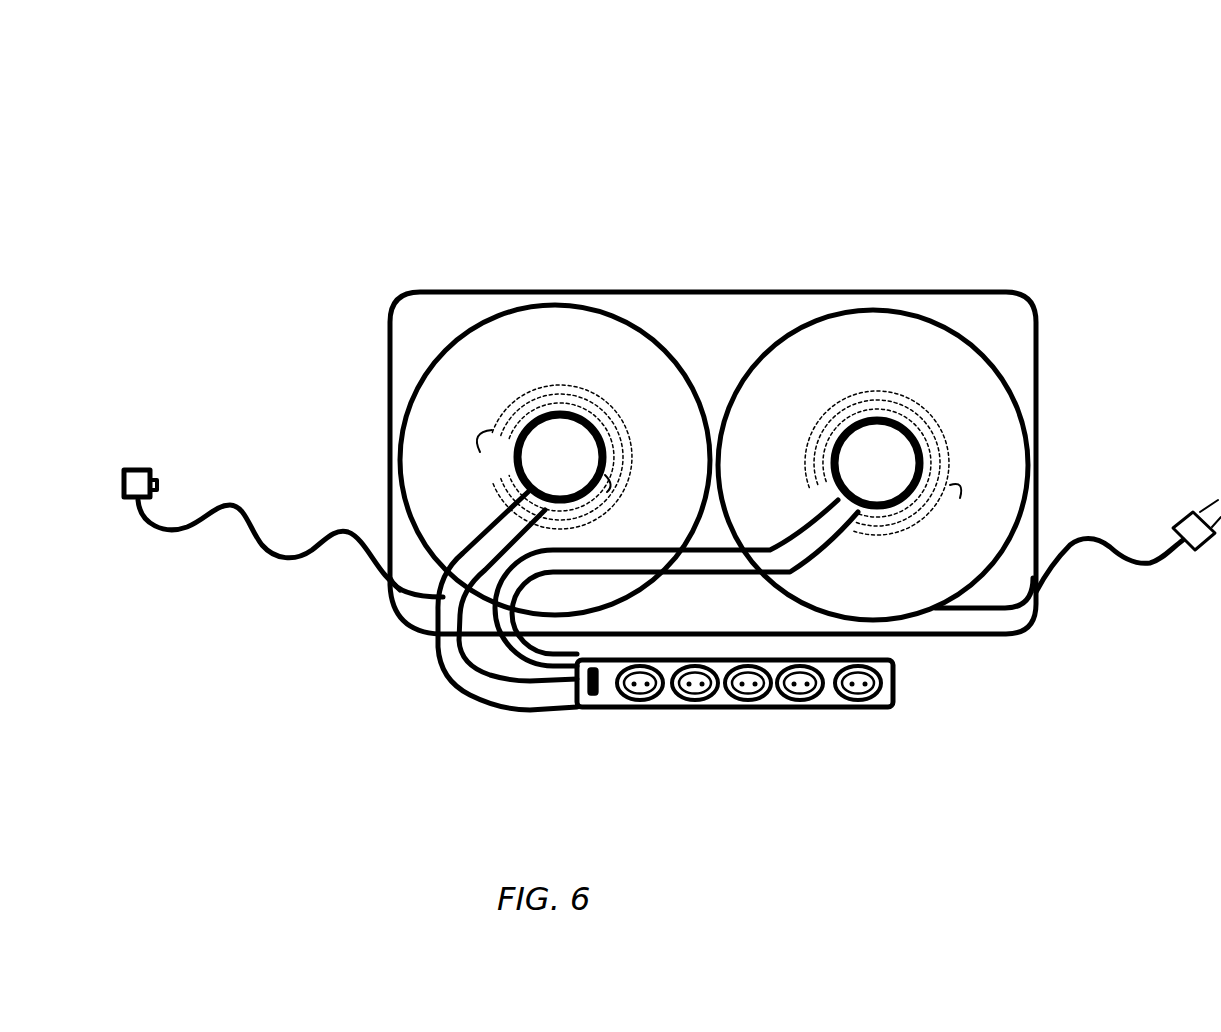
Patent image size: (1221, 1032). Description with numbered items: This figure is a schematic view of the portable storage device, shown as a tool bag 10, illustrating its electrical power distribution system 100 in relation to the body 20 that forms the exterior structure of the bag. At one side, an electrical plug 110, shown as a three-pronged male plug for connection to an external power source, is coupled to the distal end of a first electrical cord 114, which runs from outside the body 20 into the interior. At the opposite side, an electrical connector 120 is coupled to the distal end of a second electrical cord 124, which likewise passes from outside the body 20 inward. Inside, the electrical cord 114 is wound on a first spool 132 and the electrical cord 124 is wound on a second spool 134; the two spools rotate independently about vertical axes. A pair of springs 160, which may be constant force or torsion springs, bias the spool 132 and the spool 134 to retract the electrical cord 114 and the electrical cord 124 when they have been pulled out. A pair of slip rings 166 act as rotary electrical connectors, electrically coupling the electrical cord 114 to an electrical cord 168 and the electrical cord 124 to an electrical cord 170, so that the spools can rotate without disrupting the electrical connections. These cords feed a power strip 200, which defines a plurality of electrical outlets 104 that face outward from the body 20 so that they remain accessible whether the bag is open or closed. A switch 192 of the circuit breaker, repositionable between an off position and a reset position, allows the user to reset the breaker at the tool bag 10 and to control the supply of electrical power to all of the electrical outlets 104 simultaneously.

The tool bag 10 is at (1022, 115).
The body 20 is at (407, 297).
The system 100 is at (998, 326).
The spool 134 is at (617, 378).
The spool 132 is at (878, 375).
The springs 160 is at (527, 393).
The slip rings 166 is at (582, 468).
The electrical cord 170 is at (442, 660).
The electrical cord 168 is at (845, 523).
The power strip 200 is at (778, 708).
The electrical outlets 104 is at (698, 706).
The switch 192 is at (597, 708).
The electrical cord 124 is at (235, 512).
The electrical connector 120 is at (157, 473).
The electrical cord 114 is at (1095, 530).
The electrical plug 110 is at (1190, 552).